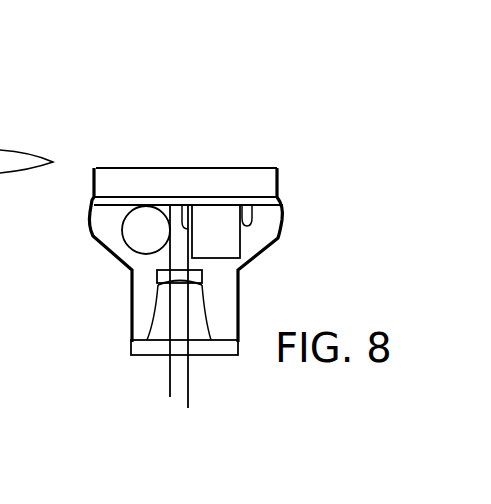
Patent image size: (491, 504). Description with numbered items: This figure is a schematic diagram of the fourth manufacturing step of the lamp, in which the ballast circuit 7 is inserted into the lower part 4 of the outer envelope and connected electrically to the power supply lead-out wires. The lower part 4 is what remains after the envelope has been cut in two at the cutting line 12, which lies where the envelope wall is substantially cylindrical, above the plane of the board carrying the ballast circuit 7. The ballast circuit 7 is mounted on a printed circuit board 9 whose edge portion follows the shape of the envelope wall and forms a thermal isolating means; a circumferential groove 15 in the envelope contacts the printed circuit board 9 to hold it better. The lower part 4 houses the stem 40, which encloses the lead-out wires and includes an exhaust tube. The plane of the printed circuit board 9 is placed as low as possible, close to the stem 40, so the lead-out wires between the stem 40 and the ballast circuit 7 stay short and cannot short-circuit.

The cutting line 12 is at (155, 168).
The circumferential groove 15 is at (93, 203).
The lower part 4 is at (277, 183).
The printed circuit board 9 is at (283, 200).
The ballast circuit 7 is at (223, 232).
The stem 40 is at (148, 294).